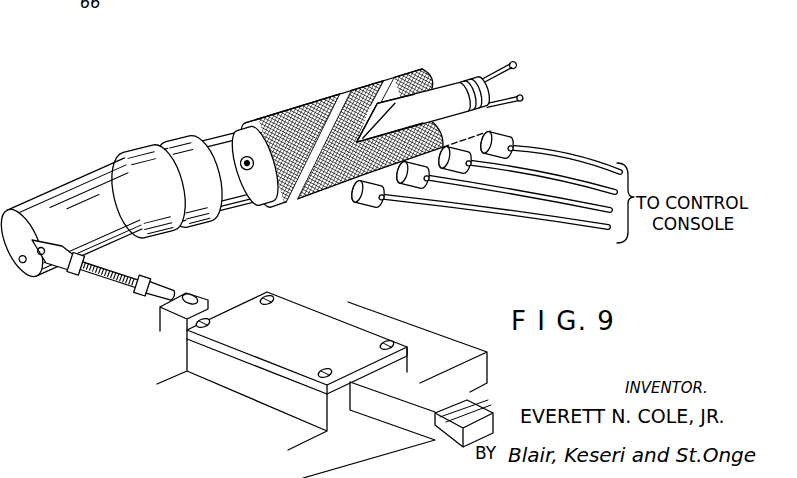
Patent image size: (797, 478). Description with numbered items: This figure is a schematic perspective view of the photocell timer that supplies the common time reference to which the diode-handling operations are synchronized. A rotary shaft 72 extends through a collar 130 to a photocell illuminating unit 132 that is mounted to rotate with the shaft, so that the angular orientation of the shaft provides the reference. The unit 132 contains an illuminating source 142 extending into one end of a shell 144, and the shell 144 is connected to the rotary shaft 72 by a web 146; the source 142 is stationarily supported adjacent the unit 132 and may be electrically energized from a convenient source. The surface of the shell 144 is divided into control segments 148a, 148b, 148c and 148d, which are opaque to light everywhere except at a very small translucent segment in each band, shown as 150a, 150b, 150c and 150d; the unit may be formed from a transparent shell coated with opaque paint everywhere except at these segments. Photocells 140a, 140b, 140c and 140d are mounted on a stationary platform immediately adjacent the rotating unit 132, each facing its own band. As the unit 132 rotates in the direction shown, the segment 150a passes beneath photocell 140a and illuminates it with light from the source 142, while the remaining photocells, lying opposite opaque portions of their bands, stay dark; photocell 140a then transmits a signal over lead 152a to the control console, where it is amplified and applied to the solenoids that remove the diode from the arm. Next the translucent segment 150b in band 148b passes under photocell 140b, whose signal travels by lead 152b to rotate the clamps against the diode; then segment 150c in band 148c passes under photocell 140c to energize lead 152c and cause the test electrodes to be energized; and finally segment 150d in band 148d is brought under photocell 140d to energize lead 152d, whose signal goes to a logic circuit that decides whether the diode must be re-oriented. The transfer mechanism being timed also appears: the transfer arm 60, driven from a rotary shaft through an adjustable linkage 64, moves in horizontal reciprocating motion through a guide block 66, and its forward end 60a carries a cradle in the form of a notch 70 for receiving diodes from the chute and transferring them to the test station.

The rotary shaft 72 is at (70, 194).
The collar 130 is at (122, 166).
The shell 144 is at (231, 127).
The web 146 is at (246, 203).
The control segment 148a is at (259, 124).
The control segment 148b is at (301, 93).
The control segment 148c is at (348, 80).
The control segment 148d is at (392, 88).
The translucent segment 150a is at (278, 160).
The translucent segment 150b is at (331, 197).
The translucent segment 150c is at (391, 79).
The translucent segment 150d is at (504, 53).
The photocell illuminating unit 132 is at (334, 64).
The illuminating source 142 is at (517, 61).
The photocell 140a is at (372, 216).
The photocell 140b is at (422, 189).
The photocell 140c is at (458, 148).
The photocell 140d is at (510, 140).
The lead 152a is at (521, 219).
The lead 152b is at (564, 206).
The lead 152c is at (578, 185).
The lead 152d is at (603, 165).
The transfer arm 60 is at (210, 310).
The forward end 60a is at (150, 6).
The adjustable linkage 64 is at (117, 284).
The guide block 66 is at (275, 388).
The notch 70 is at (463, 408).